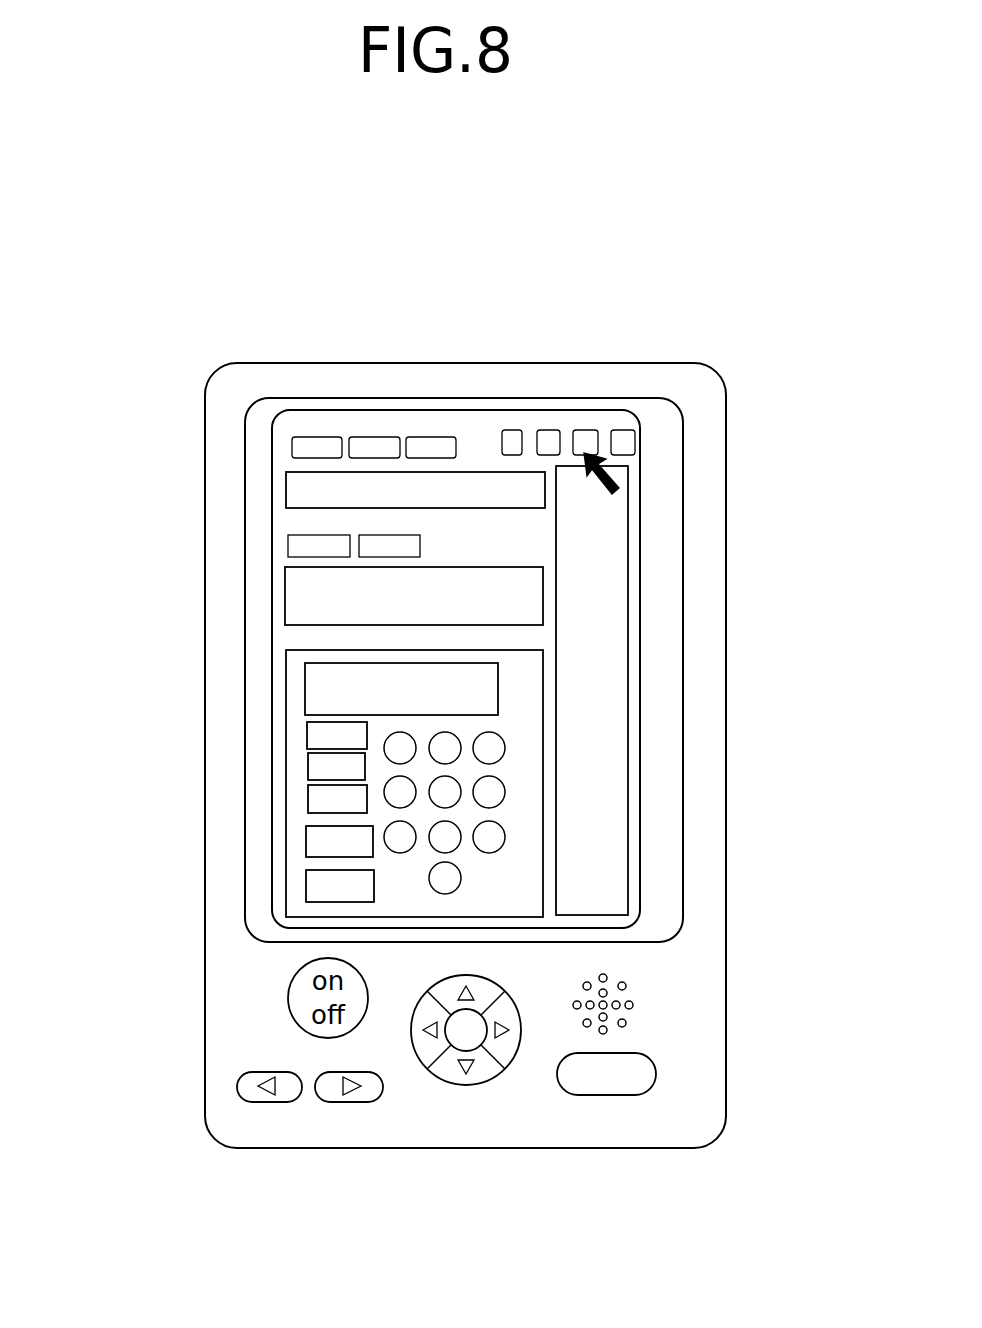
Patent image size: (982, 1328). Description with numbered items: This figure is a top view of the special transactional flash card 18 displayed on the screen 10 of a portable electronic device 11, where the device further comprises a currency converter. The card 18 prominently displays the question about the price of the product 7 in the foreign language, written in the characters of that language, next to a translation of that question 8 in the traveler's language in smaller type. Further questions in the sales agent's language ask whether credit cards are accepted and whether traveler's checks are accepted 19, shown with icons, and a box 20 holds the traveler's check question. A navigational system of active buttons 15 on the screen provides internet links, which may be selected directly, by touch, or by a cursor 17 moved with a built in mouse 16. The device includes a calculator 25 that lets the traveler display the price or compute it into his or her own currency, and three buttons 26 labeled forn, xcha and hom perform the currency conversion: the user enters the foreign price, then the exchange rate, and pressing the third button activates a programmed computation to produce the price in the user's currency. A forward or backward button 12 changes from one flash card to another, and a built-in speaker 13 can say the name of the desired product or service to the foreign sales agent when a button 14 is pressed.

The question about the price of the product 7 is at (608, 522).
The translation of the question about the price 8 is at (307, 423).
The screen 10 is at (658, 820).
The portable electronic device 11 is at (494, 310).
The forward or backward button 12 is at (238, 1088).
The speaker 13 is at (630, 993).
The button 14 is at (653, 1075).
The active buttons 15 is at (627, 432).
The built in mouse 16 is at (482, 1073).
The cursor 17 is at (608, 477).
The special transactional flash card 18 is at (595, 905).
The question whether traveler's checks are accepted 19 is at (297, 476).
The translated sentence field 20 is at (297, 572).
The calculator 25 is at (303, 705).
The three buttons 26 is at (308, 793).